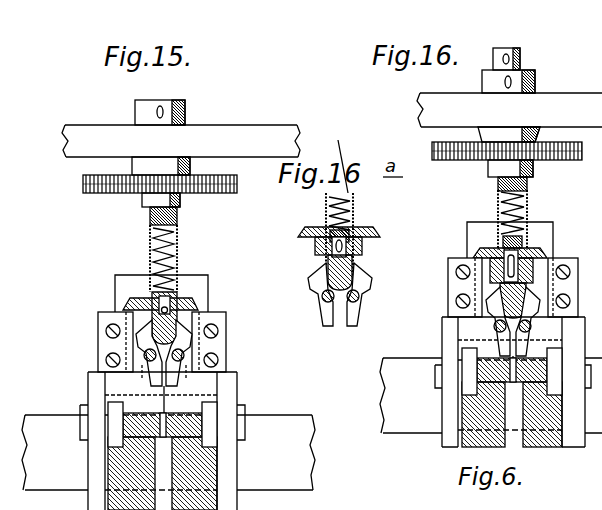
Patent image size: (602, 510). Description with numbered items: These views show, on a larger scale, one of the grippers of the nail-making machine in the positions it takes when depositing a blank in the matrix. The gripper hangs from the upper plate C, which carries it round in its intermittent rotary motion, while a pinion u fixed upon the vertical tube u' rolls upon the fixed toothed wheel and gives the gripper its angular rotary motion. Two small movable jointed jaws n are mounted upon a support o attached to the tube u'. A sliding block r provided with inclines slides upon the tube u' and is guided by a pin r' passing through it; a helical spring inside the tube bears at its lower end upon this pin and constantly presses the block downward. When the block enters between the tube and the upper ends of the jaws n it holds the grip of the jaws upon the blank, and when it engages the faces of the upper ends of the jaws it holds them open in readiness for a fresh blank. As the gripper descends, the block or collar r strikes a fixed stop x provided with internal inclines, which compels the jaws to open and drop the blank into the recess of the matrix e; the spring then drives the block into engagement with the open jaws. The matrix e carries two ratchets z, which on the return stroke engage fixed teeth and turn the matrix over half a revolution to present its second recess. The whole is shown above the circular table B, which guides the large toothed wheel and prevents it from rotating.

In FIG. 15, the upper plate C is at (181, 137).
In FIG. 16, the upper plate C is at (509, 95).
In FIG. 15, the pinion u is at (169, 186).
In FIG. 16, the pinion u is at (516, 150).
In FIG. 15, the tube u' is at (172, 242).
In FIG. 16A, the tube u' is at (318, 241).
In FIG. 16, the tube u' is at (525, 205).
In FIG. 15, the sliding block r is at (160, 310).
In FIG. 16A, the sliding block r is at (347, 247).
In FIG. 16, the sliding block r is at (510, 276).
In FIG. 16A, the pin r' is at (316, 243).
In FIG. 16, the pin r' is at (527, 240).
In FIG. 15, the support o is at (179, 338).
In FIG. 16A, the support o is at (326, 283).
In FIG. 16, the support o is at (520, 300).
In FIG. 15, the jaws n is at (164, 357).
In FIG. 16A, the jaws n is at (318, 315).
In FIG. 16, the jaws n is at (497, 337).
In FIG. 15, the fixed stop x is at (96, 346).
In FIG. 16, the fixed stop x is at (458, 287).
In FIG. 15, the ratchets z is at (162, 441).
In FIG. 16, the ratchets z is at (513, 385).
In FIG. 15, the matrix e is at (176, 400).
In FIG. 16, the matrix e is at (512, 378).
In FIG. 15, the circular table B is at (168, 452).
In FIG. 16, the circular table B is at (491, 395).